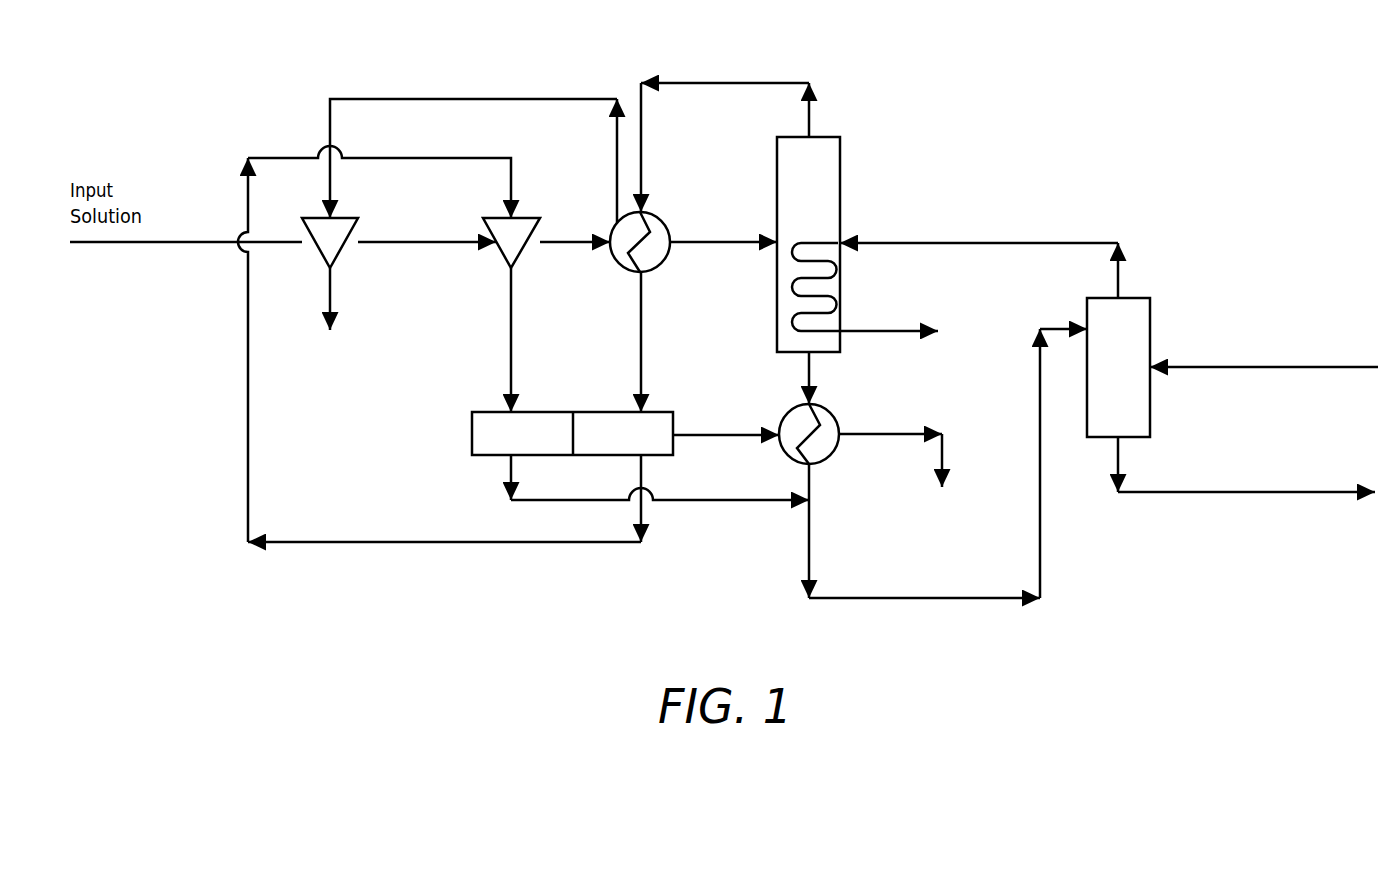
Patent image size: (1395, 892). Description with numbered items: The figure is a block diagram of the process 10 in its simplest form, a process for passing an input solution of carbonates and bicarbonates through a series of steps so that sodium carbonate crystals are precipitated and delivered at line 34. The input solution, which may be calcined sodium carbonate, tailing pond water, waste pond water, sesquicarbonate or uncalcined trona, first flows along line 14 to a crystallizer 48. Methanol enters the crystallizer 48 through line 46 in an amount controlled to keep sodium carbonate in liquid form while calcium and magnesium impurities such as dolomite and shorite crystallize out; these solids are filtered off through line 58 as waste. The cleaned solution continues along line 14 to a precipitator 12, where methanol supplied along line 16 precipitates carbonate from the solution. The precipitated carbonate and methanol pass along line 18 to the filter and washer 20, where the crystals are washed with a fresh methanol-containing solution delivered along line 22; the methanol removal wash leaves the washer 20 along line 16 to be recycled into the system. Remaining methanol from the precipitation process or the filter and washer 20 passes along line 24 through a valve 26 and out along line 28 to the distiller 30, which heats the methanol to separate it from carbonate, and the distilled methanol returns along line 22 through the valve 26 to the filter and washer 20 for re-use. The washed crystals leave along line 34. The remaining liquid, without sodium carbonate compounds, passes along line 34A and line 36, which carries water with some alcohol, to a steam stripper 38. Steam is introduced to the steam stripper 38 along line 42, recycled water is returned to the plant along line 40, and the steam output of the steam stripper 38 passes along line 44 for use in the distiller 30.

The process 10 is at (1000, 118).
The precipitator 12 is at (490, 218).
The input solution line 14 is at (124, 243).
The methanol line 16 is at (483, 158).
The precipitated carbonate line 18 is at (513, 347).
The filter and washer 20 is at (663, 412).
The methanol-containing solution line 22 is at (643, 143).
The remaining methanol line 24 is at (543, 243).
The valve 26 is at (662, 221).
The line to distiller 28 is at (690, 243).
The distiller 30 is at (841, 213).
The sodium carbonate crystal line 34 is at (873, 433).
The remaining liquid line 34A is at (675, 502).
The water line 36 is at (920, 599).
The steam stripper 38 is at (1151, 338).
The water recycle line 40 is at (1205, 493).
The steam line 42 is at (1203, 368).
The steam output line 44 is at (1032, 243).
The methanol inlet line 46 is at (490, 99).
The crystallizer 48 is at (340, 257).
The waste line 58 is at (332, 298).